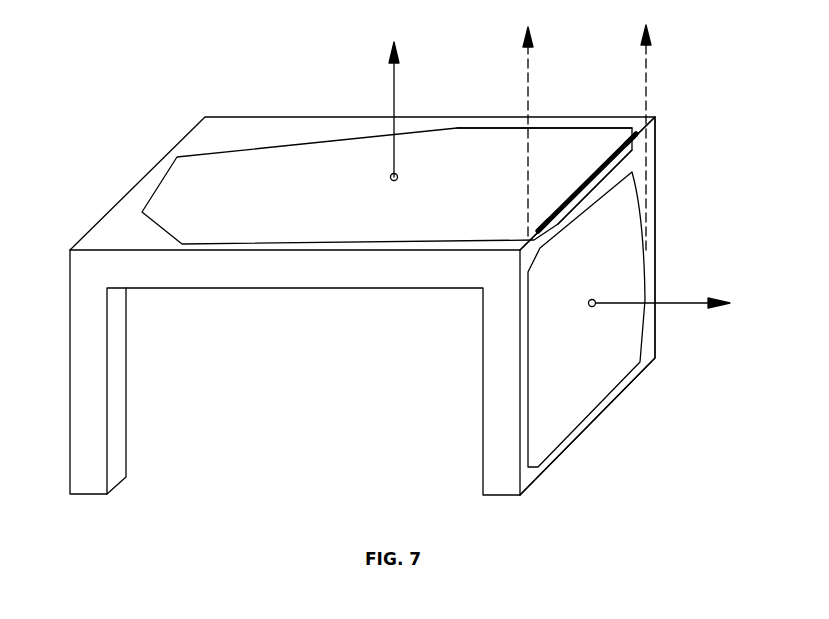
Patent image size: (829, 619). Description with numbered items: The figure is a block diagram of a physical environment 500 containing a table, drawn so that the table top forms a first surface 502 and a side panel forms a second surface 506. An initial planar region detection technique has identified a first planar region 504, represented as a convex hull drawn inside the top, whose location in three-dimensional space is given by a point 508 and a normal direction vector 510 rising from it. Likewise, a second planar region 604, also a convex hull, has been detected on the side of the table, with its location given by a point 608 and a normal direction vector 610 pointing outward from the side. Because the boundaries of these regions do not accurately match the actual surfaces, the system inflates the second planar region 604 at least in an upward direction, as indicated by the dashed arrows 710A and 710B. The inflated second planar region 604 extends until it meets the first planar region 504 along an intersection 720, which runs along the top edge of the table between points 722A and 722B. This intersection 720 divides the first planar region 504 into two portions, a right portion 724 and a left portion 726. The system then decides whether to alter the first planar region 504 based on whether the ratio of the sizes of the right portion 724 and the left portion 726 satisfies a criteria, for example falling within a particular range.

The physical environment 500 is at (118, 60).
The first surface 502 is at (148, 236).
The first planar region 504 is at (228, 215).
The second surface 506 is at (657, 252).
The point 508 is at (390, 177).
The normal direction vector 510 is at (393, 88).
The second planar region 604 is at (585, 366).
The point 608 is at (589, 302).
The normal direction vector 610 is at (690, 306).
The arrow 710A is at (528, 70).
The arrow 710B is at (650, 52).
The intersection 720 is at (618, 163).
The point 722A is at (537, 232).
The point 722B is at (637, 136).
The right portion 724 is at (595, 186).
The left portion 726 is at (562, 143).